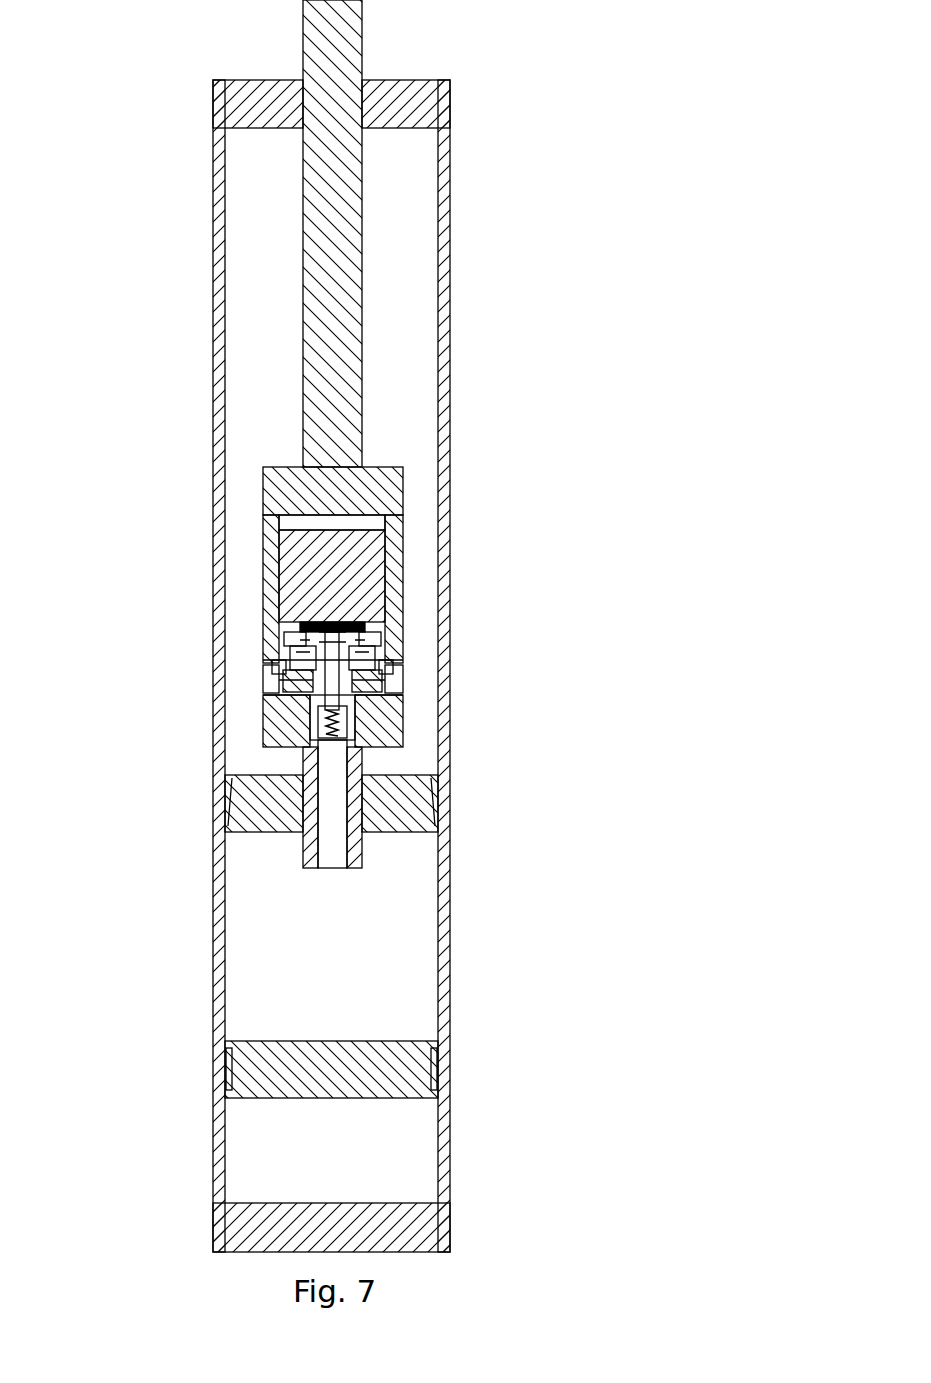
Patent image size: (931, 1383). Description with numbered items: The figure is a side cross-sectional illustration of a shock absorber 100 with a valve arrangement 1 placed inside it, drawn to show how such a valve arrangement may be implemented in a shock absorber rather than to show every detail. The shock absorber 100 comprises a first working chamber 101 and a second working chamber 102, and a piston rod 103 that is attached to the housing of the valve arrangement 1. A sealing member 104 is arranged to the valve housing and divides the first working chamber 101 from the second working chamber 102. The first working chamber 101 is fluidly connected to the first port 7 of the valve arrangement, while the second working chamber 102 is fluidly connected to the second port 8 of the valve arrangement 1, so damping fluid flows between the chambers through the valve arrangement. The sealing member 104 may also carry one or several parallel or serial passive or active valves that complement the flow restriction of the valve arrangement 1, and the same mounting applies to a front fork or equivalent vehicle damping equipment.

The shock absorber 100 is at (510, 328).
The first working chamber 101 is at (400, 960).
The second working chamber 102 is at (272, 397).
The piston rod 103 is at (362, 393).
The sealing member 104 is at (378, 815).
The valve arrangement 1 is at (424, 667).
The second port 8 is at (398, 680).
The first port 7 is at (360, 715).